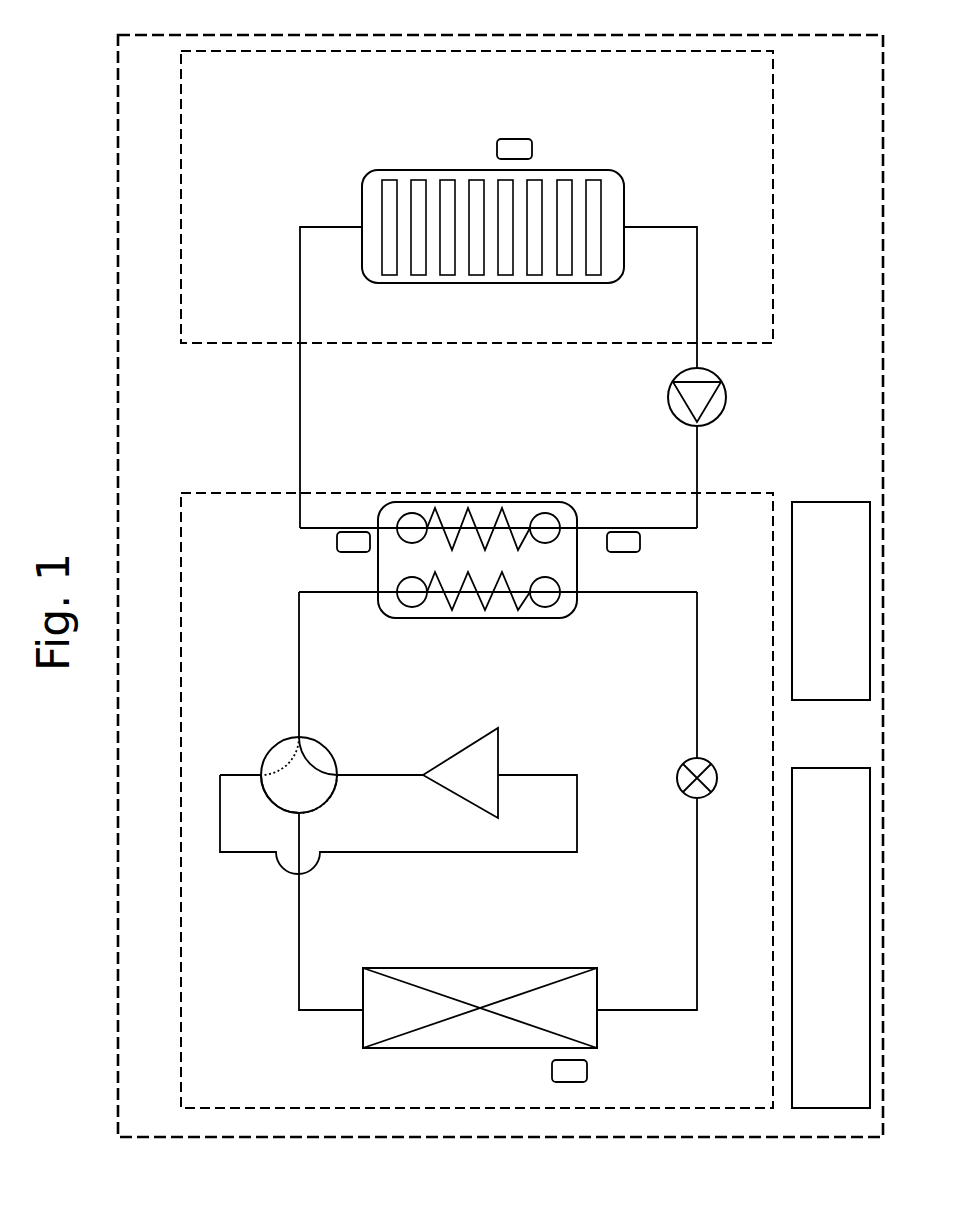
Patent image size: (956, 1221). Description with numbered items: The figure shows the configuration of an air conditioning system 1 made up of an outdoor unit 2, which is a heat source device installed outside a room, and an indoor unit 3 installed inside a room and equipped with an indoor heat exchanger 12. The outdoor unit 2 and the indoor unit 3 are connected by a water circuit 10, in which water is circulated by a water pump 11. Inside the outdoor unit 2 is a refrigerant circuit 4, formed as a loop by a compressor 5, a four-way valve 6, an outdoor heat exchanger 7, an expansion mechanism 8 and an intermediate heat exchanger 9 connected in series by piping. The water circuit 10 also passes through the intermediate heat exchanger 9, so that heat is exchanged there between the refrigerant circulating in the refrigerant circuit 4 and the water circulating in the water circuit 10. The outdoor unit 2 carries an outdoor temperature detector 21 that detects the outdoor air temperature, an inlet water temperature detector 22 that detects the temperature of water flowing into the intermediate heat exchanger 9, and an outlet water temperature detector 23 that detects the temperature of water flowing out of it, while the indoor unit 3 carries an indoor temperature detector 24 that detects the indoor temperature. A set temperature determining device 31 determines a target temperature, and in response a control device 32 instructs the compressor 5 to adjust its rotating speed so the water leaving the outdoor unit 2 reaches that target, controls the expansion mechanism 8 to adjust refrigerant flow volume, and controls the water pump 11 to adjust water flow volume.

The air conditioning system 1 is at (119, 552).
The outdoor unit 2 is at (181, 800).
The indoor unit 3 is at (181, 258).
The refrigerant circuit 4 is at (299, 960).
The compressor 5 is at (465, 746).
The four-way valve 6 is at (270, 748).
The outdoor heat exchanger 7 is at (450, 968).
The expansion mechanism 8 is at (676, 768).
The intermediate heat exchanger 9 is at (565, 617).
The water circuit 10 is at (300, 433).
The water pump 11 is at (668, 390).
The indoor heat exchanger 12 is at (627, 190).
The outdoor temperature detector 21 is at (587, 1072).
The inlet water temperature detector 22 is at (640, 542).
The outlet water temperature detector 23 is at (337, 542).
The indoor temperature detector 24 is at (497, 142).
The set temperature determining device 31 is at (850, 768).
The control device 32 is at (850, 502).